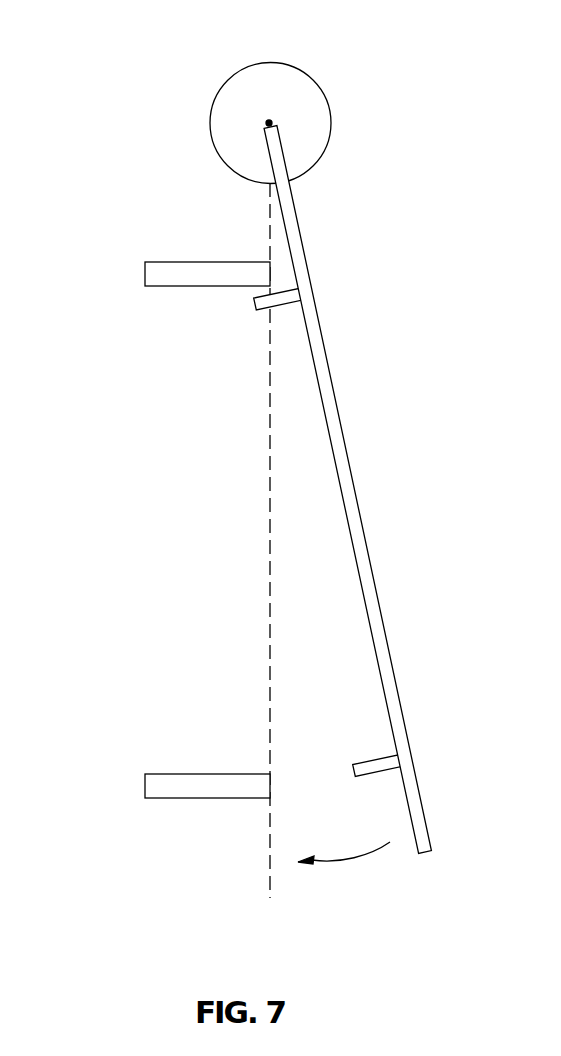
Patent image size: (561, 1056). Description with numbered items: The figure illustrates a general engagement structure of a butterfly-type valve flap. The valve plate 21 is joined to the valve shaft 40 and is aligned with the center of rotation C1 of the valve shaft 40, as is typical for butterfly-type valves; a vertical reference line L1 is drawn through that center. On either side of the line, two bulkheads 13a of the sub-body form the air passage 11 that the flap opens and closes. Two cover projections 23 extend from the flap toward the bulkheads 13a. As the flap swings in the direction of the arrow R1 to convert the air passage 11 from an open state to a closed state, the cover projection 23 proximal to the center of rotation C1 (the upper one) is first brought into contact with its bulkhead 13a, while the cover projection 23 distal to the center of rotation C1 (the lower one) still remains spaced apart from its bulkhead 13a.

The air passage 11 is at (230, 523).
The bulkhead 13a is at (145, 272).
The valve plate 21 is at (363, 528).
The cover projection 23 is at (277, 299).
The valve shaft 40 is at (210, 122).
The center of rotation C1 is at (269, 121).
The reference line L1 is at (271, 558).
The arrow indicating flap movement R1 is at (344, 866).